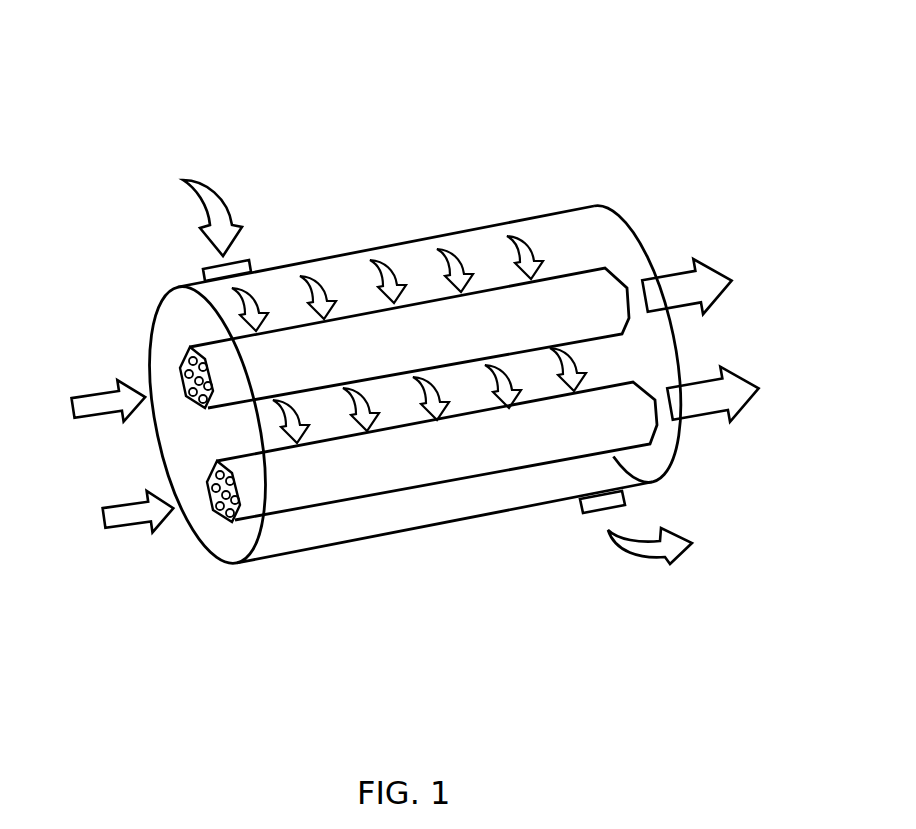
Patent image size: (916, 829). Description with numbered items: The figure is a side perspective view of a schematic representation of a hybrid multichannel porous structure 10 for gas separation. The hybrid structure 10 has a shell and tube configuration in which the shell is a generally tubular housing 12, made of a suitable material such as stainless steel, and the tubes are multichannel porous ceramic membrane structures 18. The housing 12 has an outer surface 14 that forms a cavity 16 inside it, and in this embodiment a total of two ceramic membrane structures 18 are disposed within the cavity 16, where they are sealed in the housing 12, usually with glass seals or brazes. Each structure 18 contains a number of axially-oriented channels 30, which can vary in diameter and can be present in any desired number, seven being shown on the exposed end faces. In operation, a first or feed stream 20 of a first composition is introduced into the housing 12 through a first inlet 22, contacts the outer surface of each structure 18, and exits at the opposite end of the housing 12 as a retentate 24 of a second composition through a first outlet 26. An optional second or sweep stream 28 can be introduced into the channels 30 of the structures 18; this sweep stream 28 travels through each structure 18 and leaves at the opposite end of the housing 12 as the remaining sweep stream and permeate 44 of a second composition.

The hybrid multichannel porous structure 10 is at (800, 91).
The housing 12 is at (383, 243).
The outer surface 14 is at (468, 228).
The cavity 16 is at (343, 290).
The multichannel porous ceramic membrane structure 18 is at (497, 290).
The feed stream 20 is at (224, 200).
The first inlet 22 is at (203, 276).
The retentate 24 is at (637, 555).
The first outlet 26 is at (628, 497).
The sweep stream 28 is at (105, 388).
The channels 30 is at (187, 370).
The permeate 44 is at (668, 270).